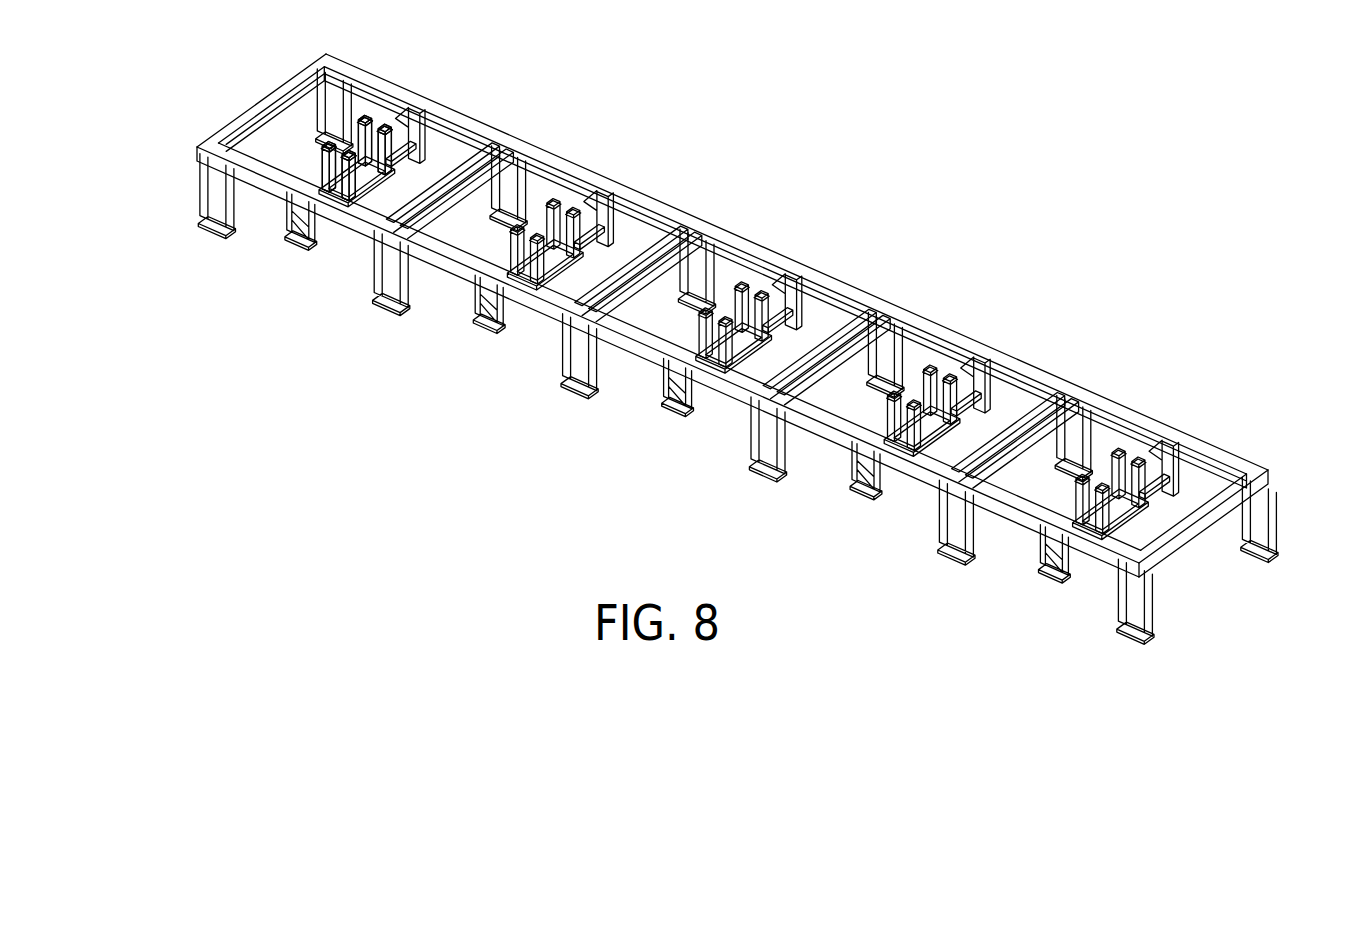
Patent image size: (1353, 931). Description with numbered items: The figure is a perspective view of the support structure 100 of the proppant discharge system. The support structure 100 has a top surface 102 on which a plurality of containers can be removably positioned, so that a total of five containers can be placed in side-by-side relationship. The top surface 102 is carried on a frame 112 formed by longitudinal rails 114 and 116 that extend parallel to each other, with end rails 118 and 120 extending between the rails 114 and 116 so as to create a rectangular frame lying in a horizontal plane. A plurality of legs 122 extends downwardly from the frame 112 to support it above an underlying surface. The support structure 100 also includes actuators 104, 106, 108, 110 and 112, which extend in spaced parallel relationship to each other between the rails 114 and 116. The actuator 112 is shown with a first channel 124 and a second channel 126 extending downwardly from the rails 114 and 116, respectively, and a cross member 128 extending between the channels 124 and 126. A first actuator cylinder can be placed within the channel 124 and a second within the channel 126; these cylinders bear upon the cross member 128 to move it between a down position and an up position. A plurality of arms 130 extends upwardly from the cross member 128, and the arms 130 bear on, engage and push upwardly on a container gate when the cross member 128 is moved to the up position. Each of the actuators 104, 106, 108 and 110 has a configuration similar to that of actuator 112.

The support structure 100 is at (851, 260).
The top surface 102 is at (512, 141).
The actuator 104 is at (320, 178).
The actuator 106 is at (506, 255).
The actuator 108 is at (697, 342).
The actuator 110 is at (880, 430).
The actuator 112 is at (345, 226).
The longitudinal rail 114 is at (530, 314).
The longitudinal rail 116 is at (657, 204).
The end rail 118 is at (262, 98).
The end rail 120 is at (1197, 538).
The legs 122 is at (202, 204).
The first channel 124 is at (1037, 563).
The second channel 126 is at (1165, 488).
The cross member 128 is at (1150, 455).
The arms 130 is at (1109, 456).